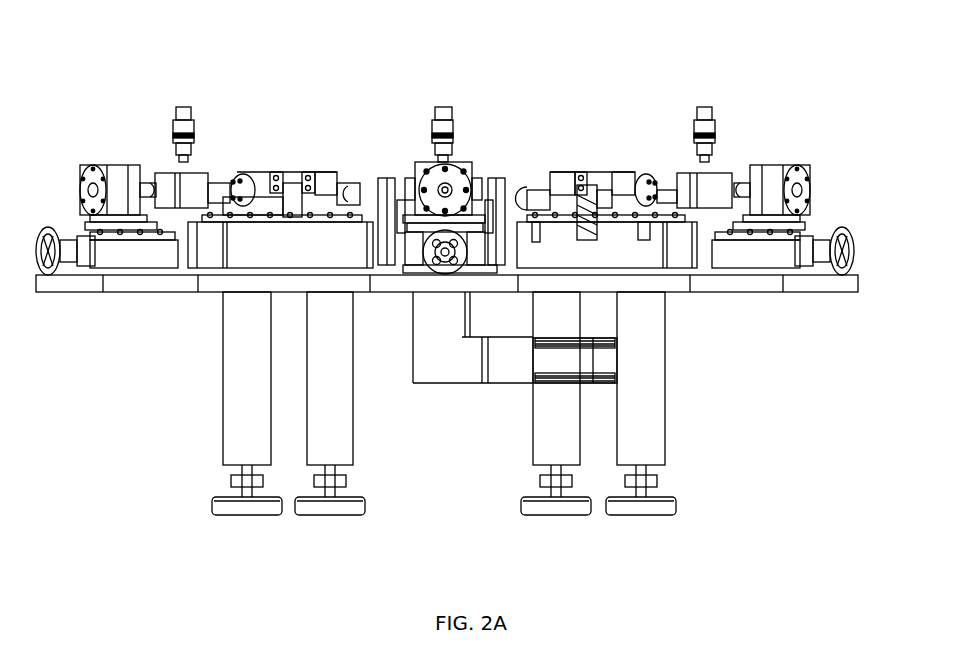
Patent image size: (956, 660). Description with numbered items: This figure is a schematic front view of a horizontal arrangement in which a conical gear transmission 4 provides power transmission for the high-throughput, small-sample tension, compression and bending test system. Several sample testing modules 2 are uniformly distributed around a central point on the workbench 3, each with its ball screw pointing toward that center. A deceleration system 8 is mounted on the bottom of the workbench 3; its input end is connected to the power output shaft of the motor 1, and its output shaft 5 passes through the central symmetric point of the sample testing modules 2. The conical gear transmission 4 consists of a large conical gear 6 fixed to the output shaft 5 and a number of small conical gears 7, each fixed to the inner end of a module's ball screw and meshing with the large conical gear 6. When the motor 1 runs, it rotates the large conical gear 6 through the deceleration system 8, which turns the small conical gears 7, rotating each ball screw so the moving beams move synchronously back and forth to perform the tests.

The motor 1 is at (578, 360).
The sample testing module 2 is at (250, 235).
The workbench 3 is at (308, 282).
The conical gear transmission 4 is at (728, 61).
The output shaft 5 is at (562, 124).
The large conical gear 6 is at (630, 123).
The small conical gear 7 is at (683, 107).
The deceleration system 8 is at (433, 349).